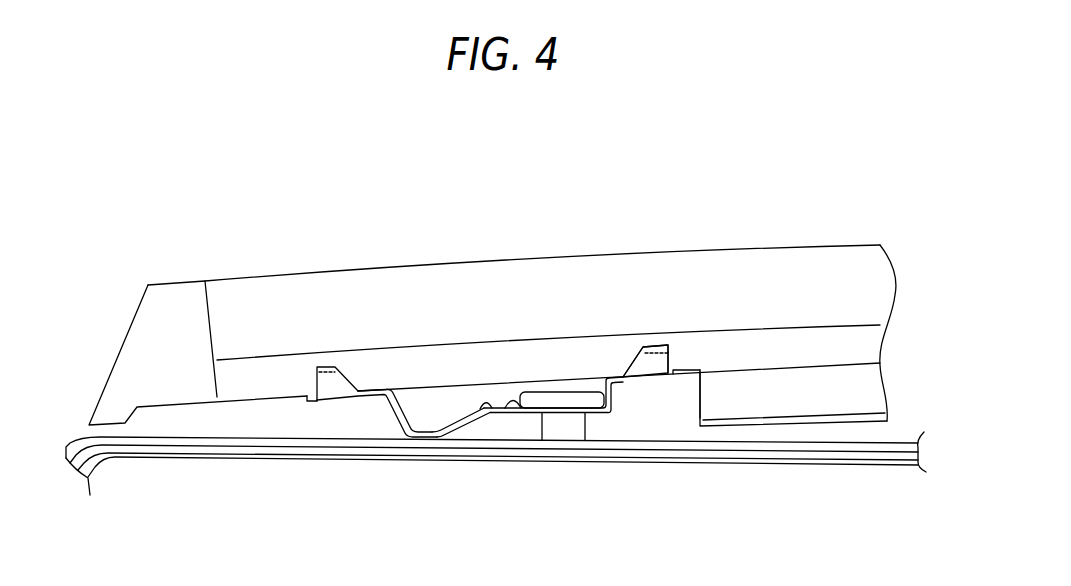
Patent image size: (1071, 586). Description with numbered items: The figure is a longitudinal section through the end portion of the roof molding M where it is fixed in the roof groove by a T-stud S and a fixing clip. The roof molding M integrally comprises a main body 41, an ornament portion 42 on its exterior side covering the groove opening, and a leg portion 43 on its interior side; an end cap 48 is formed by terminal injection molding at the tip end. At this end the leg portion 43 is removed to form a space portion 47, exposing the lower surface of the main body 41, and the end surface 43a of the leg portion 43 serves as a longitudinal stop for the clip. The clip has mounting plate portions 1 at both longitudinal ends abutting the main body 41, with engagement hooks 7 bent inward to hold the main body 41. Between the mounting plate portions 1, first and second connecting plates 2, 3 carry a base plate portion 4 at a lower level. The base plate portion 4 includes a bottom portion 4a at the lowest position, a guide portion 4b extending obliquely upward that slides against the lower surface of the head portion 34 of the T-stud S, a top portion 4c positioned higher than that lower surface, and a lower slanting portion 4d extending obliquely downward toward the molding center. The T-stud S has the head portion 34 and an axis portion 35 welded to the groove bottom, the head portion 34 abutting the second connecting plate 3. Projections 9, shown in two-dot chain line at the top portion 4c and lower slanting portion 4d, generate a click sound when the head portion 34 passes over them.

The roof molding M is at (628, 247).
The mounting plate portion 1 is at (308, 401).
The first connecting plate 2 is at (395, 416).
The second connecting plate 3 is at (620, 384).
The base plate portion 4 is at (470, 465).
The bottom portion 4a is at (420, 435).
The guide portion 4b is at (462, 428).
The top portion 4c is at (484, 413).
The lower slanting portion 4d is at (556, 445).
The engagement hook 7 is at (351, 369).
The projection 9 is at (509, 398).
The head portion 34 is at (605, 412).
The axis portion 35 is at (567, 432).
The main body 41 is at (548, 358).
The ornament portion 42 is at (760, 272).
The leg portion 43 is at (813, 400).
The end surface of the leg portion 43a is at (700, 398).
The space portion 47 is at (435, 400).
The end cap 48 is at (152, 343).
The T-stud S is at (584, 472).